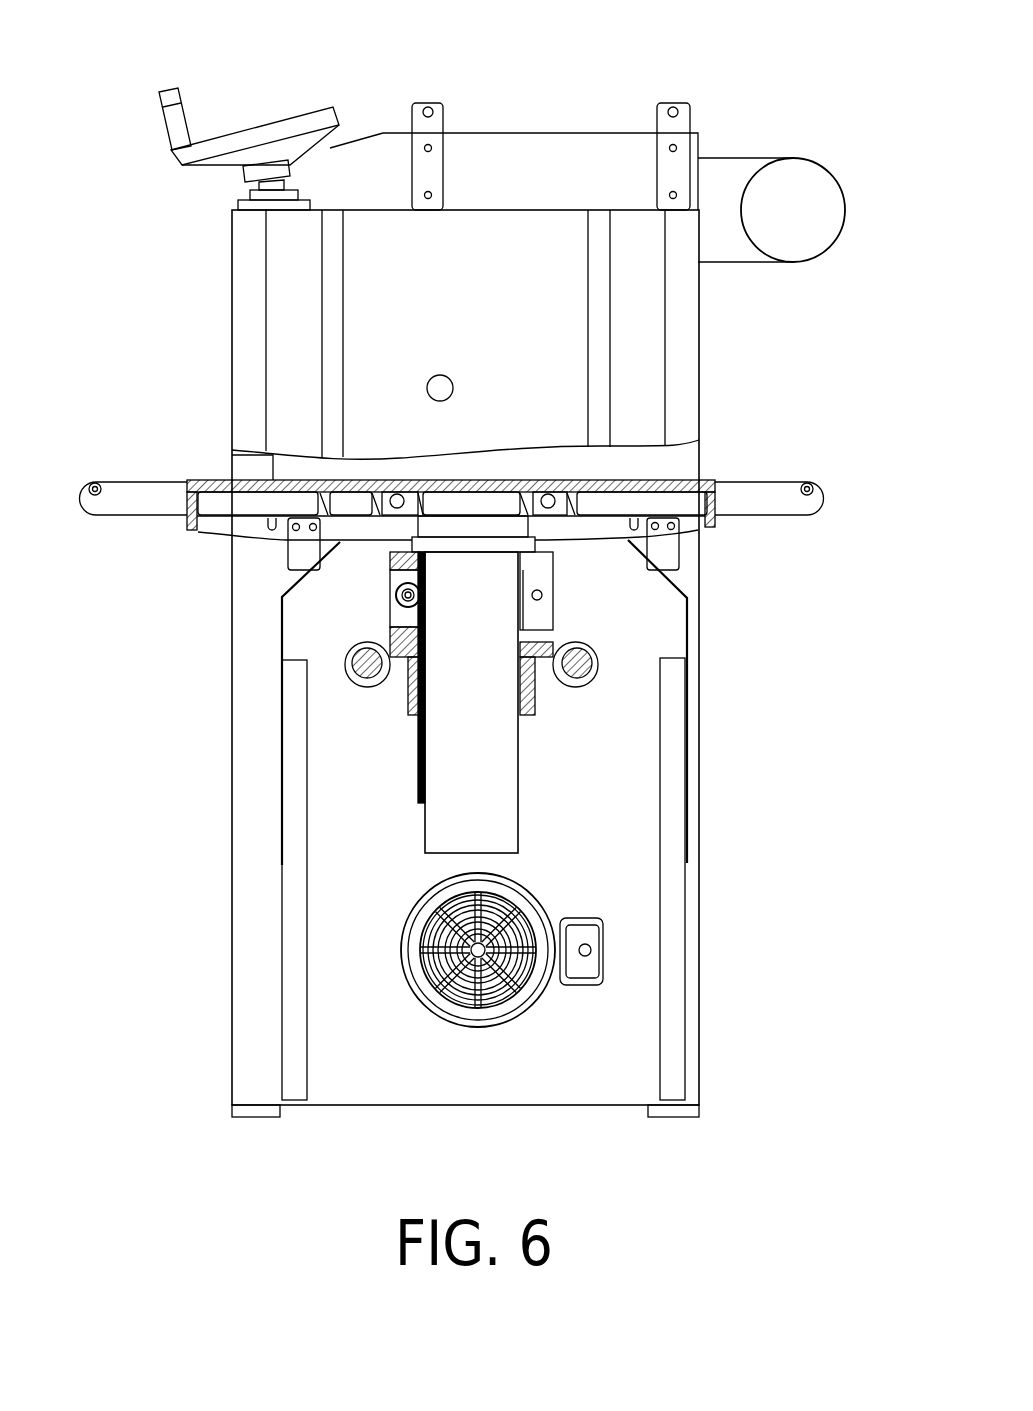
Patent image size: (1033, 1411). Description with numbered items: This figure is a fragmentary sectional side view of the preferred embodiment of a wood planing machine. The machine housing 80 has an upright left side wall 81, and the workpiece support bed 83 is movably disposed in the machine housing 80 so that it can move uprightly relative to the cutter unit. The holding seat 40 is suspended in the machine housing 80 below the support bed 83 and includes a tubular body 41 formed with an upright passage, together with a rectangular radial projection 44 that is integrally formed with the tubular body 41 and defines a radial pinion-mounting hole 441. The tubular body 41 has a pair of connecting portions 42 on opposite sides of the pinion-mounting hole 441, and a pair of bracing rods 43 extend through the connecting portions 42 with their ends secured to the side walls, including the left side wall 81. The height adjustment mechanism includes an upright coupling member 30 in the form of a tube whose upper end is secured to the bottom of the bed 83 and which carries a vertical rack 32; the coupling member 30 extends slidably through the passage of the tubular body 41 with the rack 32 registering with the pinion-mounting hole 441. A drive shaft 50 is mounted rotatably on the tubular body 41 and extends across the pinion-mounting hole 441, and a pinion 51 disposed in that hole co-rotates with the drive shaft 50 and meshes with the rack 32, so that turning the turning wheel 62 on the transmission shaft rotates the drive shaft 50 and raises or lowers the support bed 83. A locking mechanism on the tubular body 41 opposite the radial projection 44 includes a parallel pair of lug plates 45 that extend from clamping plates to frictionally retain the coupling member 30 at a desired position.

The coupling member 30 is at (522, 827).
The vertical rack 32 is at (392, 587).
The holding seat 40 is at (612, 651).
The tubular body 41 is at (530, 715).
The connecting portions 42 is at (560, 683).
The bracing rods 43 is at (590, 670).
The radial projection 44 is at (400, 560).
The pinion-mounting hole 441 is at (397, 582).
The lug plates 45 is at (550, 580).
The drive shaft 50 is at (385, 615).
The pinion 51 is at (383, 610).
The turning wheel 62 is at (296, 122).
The machine housing 80 is at (702, 317).
The left side wall 81 is at (560, 367).
The workpiece support bed 83 is at (653, 488).